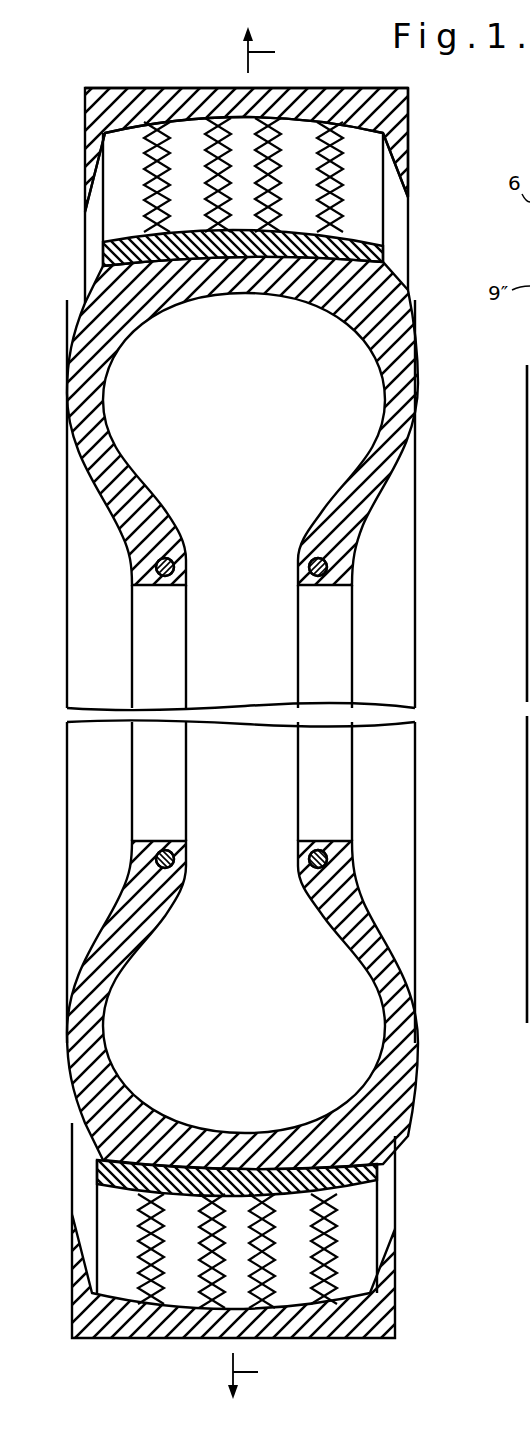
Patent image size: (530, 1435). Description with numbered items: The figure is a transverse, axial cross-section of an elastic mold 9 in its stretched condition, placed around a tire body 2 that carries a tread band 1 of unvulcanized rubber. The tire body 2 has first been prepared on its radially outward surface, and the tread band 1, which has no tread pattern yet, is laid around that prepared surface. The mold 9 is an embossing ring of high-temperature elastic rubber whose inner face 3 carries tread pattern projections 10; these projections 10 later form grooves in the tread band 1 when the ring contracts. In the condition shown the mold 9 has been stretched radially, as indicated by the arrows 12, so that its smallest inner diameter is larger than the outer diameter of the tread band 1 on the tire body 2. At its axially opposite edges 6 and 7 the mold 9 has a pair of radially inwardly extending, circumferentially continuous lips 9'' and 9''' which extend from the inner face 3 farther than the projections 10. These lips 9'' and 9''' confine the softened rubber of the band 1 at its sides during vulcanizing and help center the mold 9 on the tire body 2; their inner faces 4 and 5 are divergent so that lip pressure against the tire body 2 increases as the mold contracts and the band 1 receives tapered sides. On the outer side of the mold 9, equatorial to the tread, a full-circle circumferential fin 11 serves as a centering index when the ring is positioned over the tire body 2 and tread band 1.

The tread band 1 is at (380, 258).
The tire body 2 is at (420, 390).
The inner face 3 is at (367, 128).
The inner face of lip 4 is at (393, 213).
The inner face of lip 5 is at (90, 222).
The axial edge 6 is at (85, 101).
The axial edge 7 is at (408, 97).
The elastic mold 9 is at (334, 70).
The lip 9'' is at (69, 172).
The lip 9''' is at (420, 165).
The tread pattern projections 10 is at (168, 170).
The circumferential fin 11 is at (248, 88).
The arrows 12 is at (267, 713).